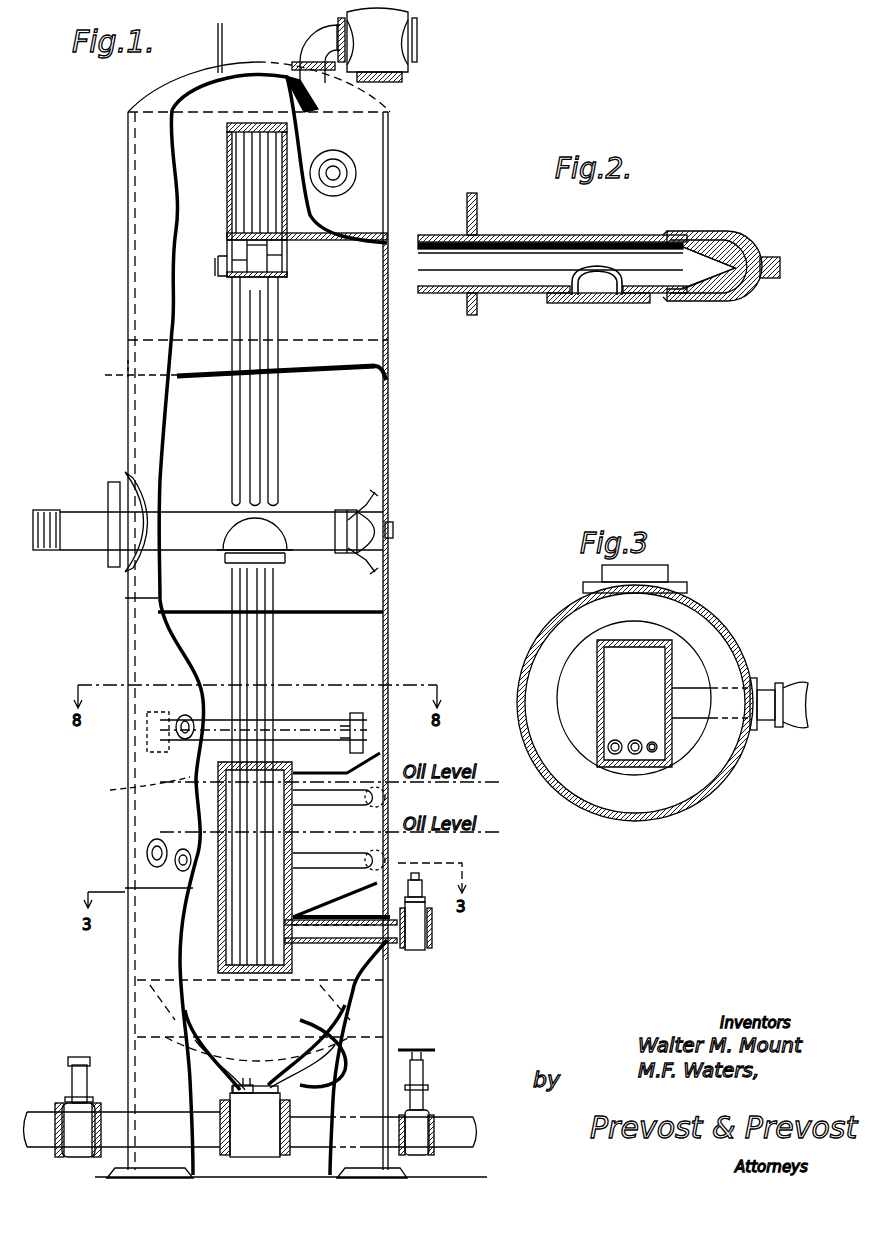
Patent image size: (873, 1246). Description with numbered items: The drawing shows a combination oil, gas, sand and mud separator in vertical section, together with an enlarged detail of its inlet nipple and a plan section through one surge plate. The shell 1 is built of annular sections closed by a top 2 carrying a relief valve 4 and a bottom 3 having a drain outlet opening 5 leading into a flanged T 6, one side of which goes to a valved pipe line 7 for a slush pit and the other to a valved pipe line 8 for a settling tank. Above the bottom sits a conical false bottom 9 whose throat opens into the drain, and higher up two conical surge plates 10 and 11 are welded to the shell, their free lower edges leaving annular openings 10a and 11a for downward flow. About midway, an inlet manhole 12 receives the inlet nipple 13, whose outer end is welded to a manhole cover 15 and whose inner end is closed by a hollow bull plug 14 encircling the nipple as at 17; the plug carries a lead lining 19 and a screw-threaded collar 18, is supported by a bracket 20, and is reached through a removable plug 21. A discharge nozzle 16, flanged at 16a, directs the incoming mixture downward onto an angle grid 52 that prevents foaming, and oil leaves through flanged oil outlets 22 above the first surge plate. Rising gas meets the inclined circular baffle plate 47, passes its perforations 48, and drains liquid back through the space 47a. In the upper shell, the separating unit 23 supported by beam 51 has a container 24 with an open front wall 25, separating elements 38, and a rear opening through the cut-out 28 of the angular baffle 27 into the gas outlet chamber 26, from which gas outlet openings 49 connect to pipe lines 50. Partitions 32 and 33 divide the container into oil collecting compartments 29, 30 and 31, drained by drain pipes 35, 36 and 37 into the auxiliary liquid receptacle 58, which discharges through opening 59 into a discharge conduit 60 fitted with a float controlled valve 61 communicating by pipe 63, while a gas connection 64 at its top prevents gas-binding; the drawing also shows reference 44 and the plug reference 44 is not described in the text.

In FIG. 1, the shell 1 is at (388, 398).
In FIG. 3, the shell 1 is at (540, 655).
In FIG. 1, the top 2 is at (375, 95).
In FIG. 1, the bottom 3 is at (312, 1083).
In FIG. 1, the relief valve 4 is at (400, 40).
In FIG. 1, the drain outlet opening 5 is at (243, 1078).
In FIG. 1, the flanged T 6 is at (255, 1121).
In FIG. 1, the valved pipe line 7 is at (112, 1125).
In FIG. 1, the valved pipe line 8 is at (455, 1125).
In FIG. 1, the false bottom 9 is at (322, 1000).
In FIG. 1, the surge plate 10 is at (383, 758).
In FIG. 1, the annular opening 10a is at (136, 788).
In FIG. 1, the surge plate 11 is at (385, 865).
In FIG. 3, the surge plate 11 is at (707, 660).
In FIG. 1, the annular opening 11a is at (333, 912).
In FIG. 1, the inlet manhole 12 is at (128, 505).
In FIG. 1, the inlet nipple 13 is at (180, 528).
In FIG. 2, the inlet nipple 13 is at (540, 238).
In FIG. 1, the bull plug 14 is at (357, 520).
In FIG. 2, the bull plug 14 is at (752, 245).
In FIG. 1, the manhole cover 15 is at (108, 560).
In FIG. 2, the manhole cover 15 is at (480, 210).
In FIG. 1, the discharge nozzle 16 is at (268, 553).
In FIG. 2, the discharge nozzle 16 is at (627, 303).
In FIG. 2, the flange 16a is at (562, 303).
In FIG. 2, the encircling portion 17 is at (670, 231).
In FIG. 1, the screw-threaded collar 18 is at (373, 548).
In FIG. 2, the screw-threaded collar 18 is at (772, 280).
In FIG. 2, the lining 19 is at (725, 240).
In FIG. 1, the bracket 20 is at (360, 500).
In FIG. 1, the removable plug 21 is at (393, 530).
In FIG. 1, the oil outlet 22 is at (147, 853).
In FIG. 1, the oil and gas separating unit 23 is at (226, 230).
In FIG. 1, the container 24 is at (287, 262).
In FIG. 1, the open front wall 25 is at (227, 147).
In FIG. 1, the gas outlet chamber 26 is at (307, 226).
In FIG. 1, the angular baffle 27 is at (283, 98).
In FIG. 1, the cut-out 28 is at (287, 150).
In FIG. 1, the oil collecting compartment 29 is at (237, 247).
In FIG. 1, the oil collecting compartment 30 is at (232, 278).
In FIG. 1, the oil collecting compartment 31 is at (274, 284).
In FIG. 1, the partition 32 is at (226, 277).
In FIG. 1, the partition 33 is at (280, 277).
In FIG. 1, the drain pipe 35 is at (232, 402).
In FIG. 3, the drain pipe 35 is at (615, 756).
In FIG. 1, the drain pipe 36 is at (252, 432).
In FIG. 3, the drain pipe 36 is at (635, 756).
In FIG. 1, the drain pipe 37 is at (278, 445).
In FIG. 3, the drain pipe 37 is at (652, 756).
In FIG. 1, the separating elements 38 is at (255, 185).
In FIG. 1, the partition 44 is at (287, 250).
In FIG. 1, the inclined circular baffle plate 47 is at (205, 372).
In FIG. 1, the space 47a is at (131, 362).
In FIG. 1, the perforations 48 is at (318, 372).
In FIG. 1, the gas outlet opening 49 is at (345, 153).
In FIG. 1, the pipe line 50 is at (340, 173).
In FIG. 1, the beam 51 is at (218, 269).
In FIG. 1, the angle grid 52 is at (365, 718).
In FIG. 1, the auxiliary liquid receptacle 58 is at (218, 805).
In FIG. 3, the auxiliary liquid receptacle 58 is at (597, 665).
In FIG. 1, the discharge opening 59 is at (300, 945).
In FIG. 1, the discharge conduit 60 is at (385, 948).
In FIG. 3, the discharge conduit 60 is at (698, 705).
In FIG. 1, the float controlled valve 61 is at (425, 935).
In FIG. 3, the float controlled valve 61 is at (795, 682).
In FIG. 1, the pipe 63 is at (343, 805).
In FIG. 1, the connection 64 is at (303, 735).